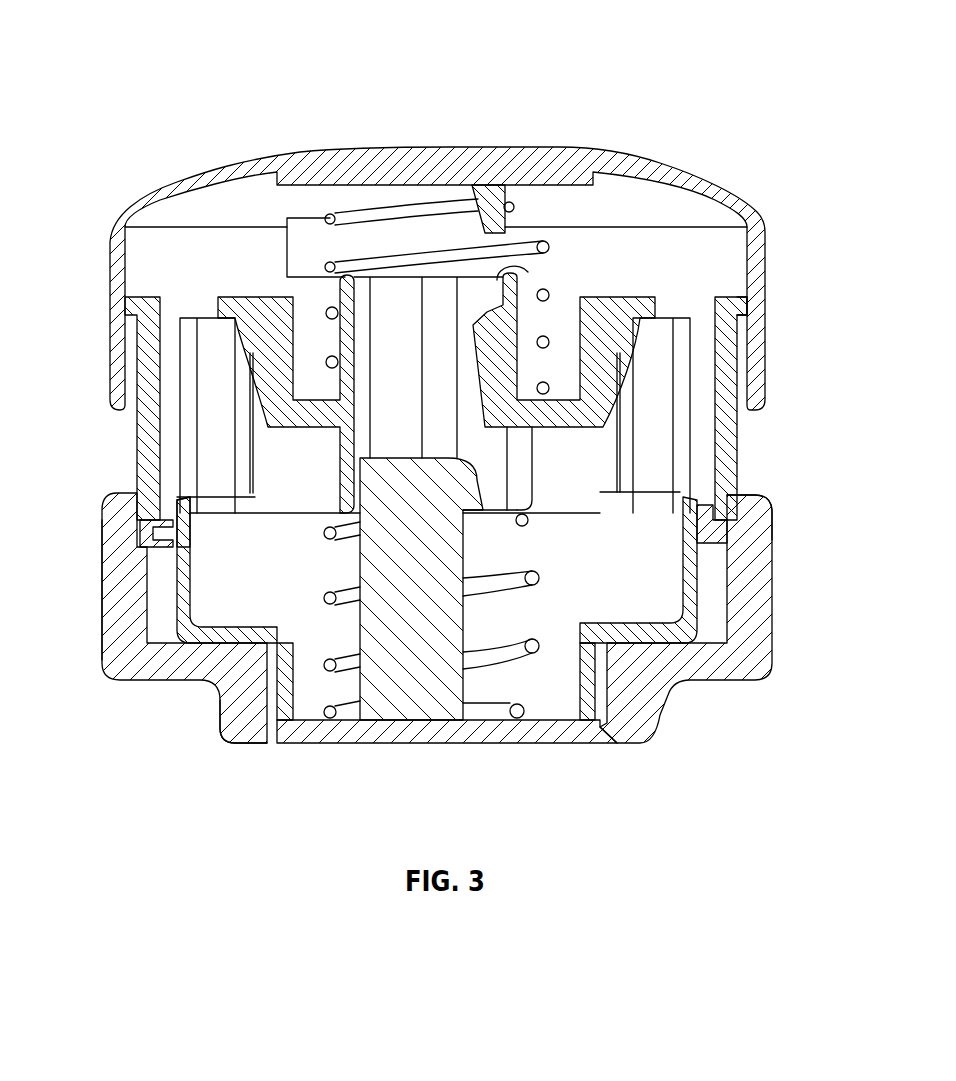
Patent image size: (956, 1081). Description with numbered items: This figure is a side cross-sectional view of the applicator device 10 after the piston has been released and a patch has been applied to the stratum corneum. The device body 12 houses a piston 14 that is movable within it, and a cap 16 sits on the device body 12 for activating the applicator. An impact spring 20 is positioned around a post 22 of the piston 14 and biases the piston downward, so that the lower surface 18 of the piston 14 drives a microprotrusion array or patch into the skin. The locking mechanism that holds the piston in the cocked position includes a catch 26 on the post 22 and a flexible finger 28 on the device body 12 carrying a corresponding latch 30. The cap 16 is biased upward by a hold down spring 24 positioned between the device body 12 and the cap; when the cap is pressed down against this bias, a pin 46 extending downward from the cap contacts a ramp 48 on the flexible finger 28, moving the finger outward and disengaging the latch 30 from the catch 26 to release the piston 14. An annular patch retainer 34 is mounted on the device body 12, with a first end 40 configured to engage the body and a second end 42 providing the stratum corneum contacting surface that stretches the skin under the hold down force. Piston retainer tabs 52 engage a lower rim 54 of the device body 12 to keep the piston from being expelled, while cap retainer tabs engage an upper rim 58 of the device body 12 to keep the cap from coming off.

The applicator device 10 is at (161, 54).
The device body 12 is at (429, 430).
The piston 14 is at (433, 653).
The cap 16 is at (745, 186).
The lower surface 18 is at (447, 745).
The impact spring 20 is at (454, 650).
The post 22 is at (448, 540).
The hold down spring 24 is at (326, 214).
The catch 26 is at (497, 500).
The flexible finger 28 is at (499, 362).
The latch 30 is at (477, 300).
The patch retainer 34 is at (103, 652).
The first end 40 is at (762, 515).
The second end 42 is at (247, 744).
The pin 46 is at (491, 192).
The ramp 48 is at (530, 270).
The piston retainer tabs 52 is at (162, 523).
The lower rim 54 is at (148, 542).
The upper rim 58 is at (737, 312).